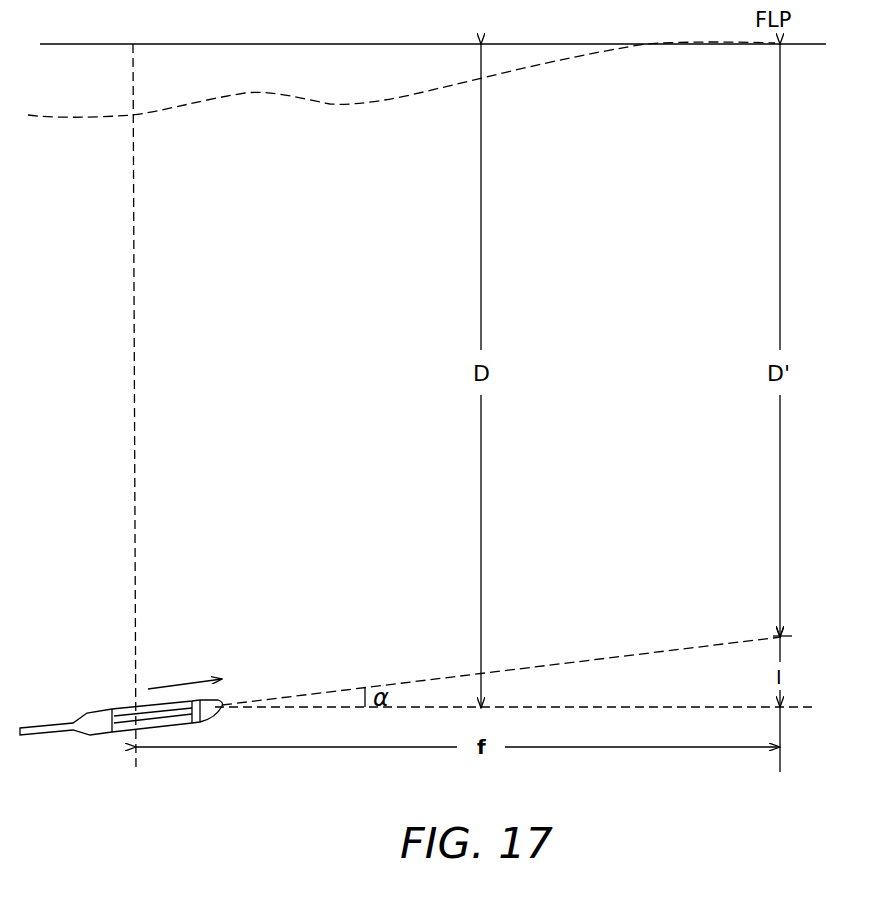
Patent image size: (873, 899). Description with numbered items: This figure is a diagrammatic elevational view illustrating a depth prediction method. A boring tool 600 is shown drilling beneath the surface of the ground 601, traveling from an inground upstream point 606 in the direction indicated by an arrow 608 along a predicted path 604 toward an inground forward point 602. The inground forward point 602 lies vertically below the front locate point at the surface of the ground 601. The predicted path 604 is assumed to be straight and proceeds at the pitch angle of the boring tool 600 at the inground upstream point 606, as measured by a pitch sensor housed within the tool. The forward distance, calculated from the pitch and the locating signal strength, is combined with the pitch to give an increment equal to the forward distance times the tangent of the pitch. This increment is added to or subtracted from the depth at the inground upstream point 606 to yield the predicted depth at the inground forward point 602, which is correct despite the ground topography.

The boring tool 600 is at (116, 733).
The surface of the ground 601 is at (323, 103).
The inground forward point 602 is at (777, 637).
The predicted path 604 is at (441, 677).
The inground upstream point 606 is at (135, 707).
The arrow 608 is at (170, 685).